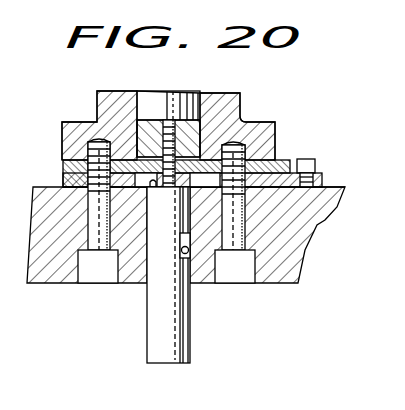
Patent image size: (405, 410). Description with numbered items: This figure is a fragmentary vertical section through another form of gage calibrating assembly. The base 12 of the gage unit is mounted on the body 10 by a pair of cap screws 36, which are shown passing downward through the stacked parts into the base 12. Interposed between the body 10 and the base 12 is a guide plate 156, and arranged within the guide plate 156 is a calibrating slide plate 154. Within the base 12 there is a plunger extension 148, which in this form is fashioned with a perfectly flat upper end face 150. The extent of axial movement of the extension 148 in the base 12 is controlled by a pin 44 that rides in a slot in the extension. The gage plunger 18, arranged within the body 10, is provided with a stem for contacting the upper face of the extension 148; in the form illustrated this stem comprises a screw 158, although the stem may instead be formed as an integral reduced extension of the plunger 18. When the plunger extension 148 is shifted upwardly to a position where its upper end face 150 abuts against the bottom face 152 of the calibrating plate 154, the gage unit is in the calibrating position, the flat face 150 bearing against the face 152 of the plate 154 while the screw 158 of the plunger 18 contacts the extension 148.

The body 10 is at (240, 113).
The base 12 is at (308, 258).
The plunger 18 is at (187, 103).
The cap screws 36 is at (92, 277).
The pin 44 is at (183, 252).
The plunger extension 148 is at (186, 356).
The upper end face 150 is at (151, 189).
The bottom face 152 is at (272, 188).
The calibrating slide plate 154 is at (318, 178).
The guide plate 156 is at (64, 168).
The screw 158 is at (168, 119).